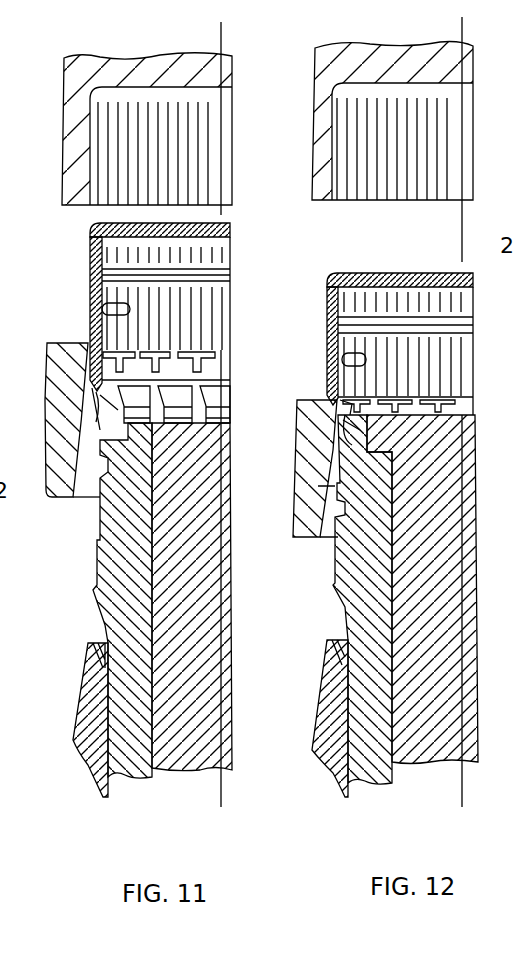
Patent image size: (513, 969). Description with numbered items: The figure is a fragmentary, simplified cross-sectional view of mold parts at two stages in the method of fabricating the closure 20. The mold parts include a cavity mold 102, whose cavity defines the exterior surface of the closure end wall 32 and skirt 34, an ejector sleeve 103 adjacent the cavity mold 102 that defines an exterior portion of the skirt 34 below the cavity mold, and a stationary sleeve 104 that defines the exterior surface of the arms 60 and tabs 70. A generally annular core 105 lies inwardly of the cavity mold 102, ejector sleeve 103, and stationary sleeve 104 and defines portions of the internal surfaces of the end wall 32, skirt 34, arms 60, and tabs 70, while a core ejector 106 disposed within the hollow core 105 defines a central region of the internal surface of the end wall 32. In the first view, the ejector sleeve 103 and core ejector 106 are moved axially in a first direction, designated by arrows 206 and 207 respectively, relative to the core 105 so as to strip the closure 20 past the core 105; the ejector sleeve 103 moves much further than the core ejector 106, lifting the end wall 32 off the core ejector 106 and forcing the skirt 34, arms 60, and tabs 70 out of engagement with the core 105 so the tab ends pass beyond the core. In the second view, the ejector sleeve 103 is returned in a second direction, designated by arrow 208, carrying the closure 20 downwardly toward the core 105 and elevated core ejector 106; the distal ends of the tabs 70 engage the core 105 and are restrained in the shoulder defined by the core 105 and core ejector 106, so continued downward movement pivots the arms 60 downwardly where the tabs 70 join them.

In FIG. 11, the closure 20 is at (90, 268).
In FIG. 12, the closure 20 is at (327, 297).
In FIG. 11, the closure end wall 32 is at (233, 230).
In FIG. 12, the closure end wall 32 is at (432, 272).
In FIG. 11, the skirt 34 is at (102, 300).
In FIG. 12, the skirt 34 is at (338, 322).
In FIG. 11, the arms 60 is at (112, 393).
In FIG. 12, the arms 60 is at (350, 440).
In FIG. 11, the tabs 70 is at (98, 412).
In FIG. 12, the tabs 70 is at (380, 428).
In FIG. 11, the cavity mold 102 is at (72, 113).
In FIG. 12, the cavity mold 102 is at (322, 112).
In FIG. 11, the ejector sleeve 103 is at (68, 490).
In FIG. 12, the ejector sleeve 103 is at (312, 538).
In FIG. 11, the stationary sleeve 104 is at (88, 770).
In FIG. 12, the stationary sleeve 104 is at (333, 770).
In FIG. 11, the core 105 is at (136, 777).
In FIG. 12, the core 105 is at (378, 775).
In FIG. 11, the core ejector 106 is at (232, 750).
In FIG. 12, the core ejector 106 is at (437, 755).
In FIG. 11, the arrow 206 is at (60, 304).
In FIG. 11, the arrow 207 is at (196, 780).
In FIG. 12, the arrow 208 is at (302, 395).